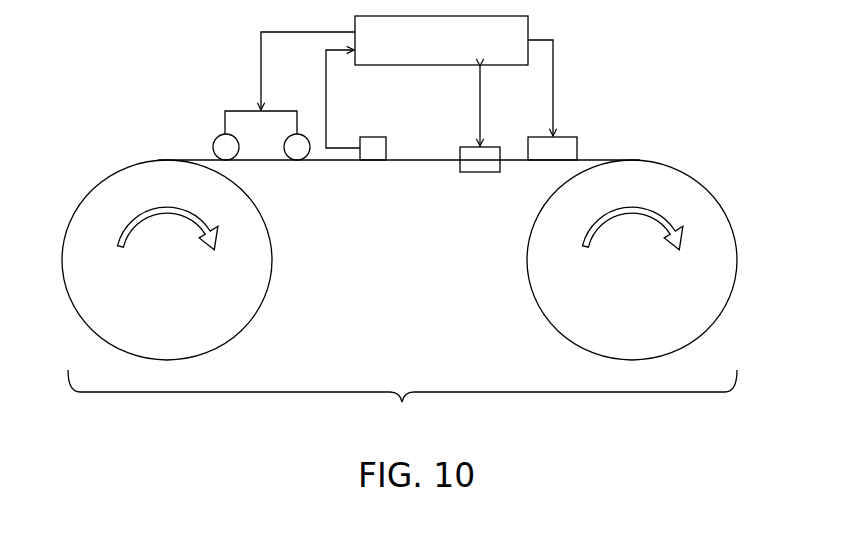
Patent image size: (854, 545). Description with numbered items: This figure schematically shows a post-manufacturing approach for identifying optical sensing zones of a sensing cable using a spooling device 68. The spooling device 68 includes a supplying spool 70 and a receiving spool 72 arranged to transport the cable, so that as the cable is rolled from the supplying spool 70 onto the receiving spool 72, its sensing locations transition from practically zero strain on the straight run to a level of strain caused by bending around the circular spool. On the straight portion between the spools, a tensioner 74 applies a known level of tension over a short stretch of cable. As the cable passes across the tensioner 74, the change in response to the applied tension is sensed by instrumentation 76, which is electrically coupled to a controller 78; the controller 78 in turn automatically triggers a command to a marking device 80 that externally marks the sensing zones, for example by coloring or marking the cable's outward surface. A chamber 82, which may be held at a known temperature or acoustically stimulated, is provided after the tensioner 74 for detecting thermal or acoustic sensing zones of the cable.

The spooling device 68 is at (402, 402).
The supplying spool 70 is at (253, 254).
The receiving spool 72 is at (546, 253).
The tensioner 74 is at (225, 118).
The instrumentation 76 is at (372, 136).
The controller 78 is at (353, 20).
The marking device 80 is at (582, 148).
The chamber 82 is at (470, 172).